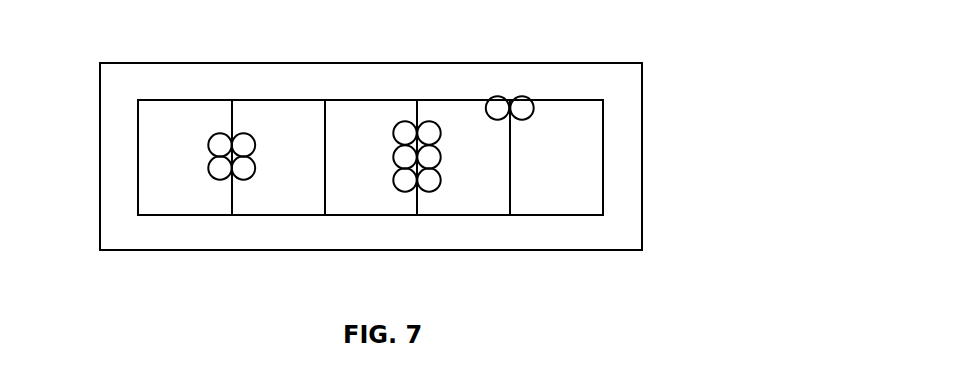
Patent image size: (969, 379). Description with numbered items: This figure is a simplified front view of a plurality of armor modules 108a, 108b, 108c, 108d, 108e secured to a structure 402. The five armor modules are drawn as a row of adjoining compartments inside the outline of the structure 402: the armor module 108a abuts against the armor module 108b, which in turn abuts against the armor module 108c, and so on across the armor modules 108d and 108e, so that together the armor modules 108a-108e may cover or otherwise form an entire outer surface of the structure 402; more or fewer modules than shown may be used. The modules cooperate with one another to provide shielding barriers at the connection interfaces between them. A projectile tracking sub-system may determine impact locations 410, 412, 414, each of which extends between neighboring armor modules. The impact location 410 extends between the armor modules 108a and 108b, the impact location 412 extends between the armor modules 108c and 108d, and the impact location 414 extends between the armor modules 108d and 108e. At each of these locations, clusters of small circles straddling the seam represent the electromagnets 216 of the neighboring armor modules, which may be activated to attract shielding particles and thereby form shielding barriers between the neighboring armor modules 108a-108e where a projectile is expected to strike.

The structure 402 is at (630, 100).
The armor module 108a is at (180, 197).
The armor module 108b is at (308, 197).
The armor module 108c is at (387, 197).
The armor module 108d is at (468, 197).
The armor module 108e is at (560, 197).
The electromagnets 216 is at (374, 178).
The impact location 410 is at (242, 125).
The impact location 412 is at (432, 114).
The impact location 414 is at (526, 90).